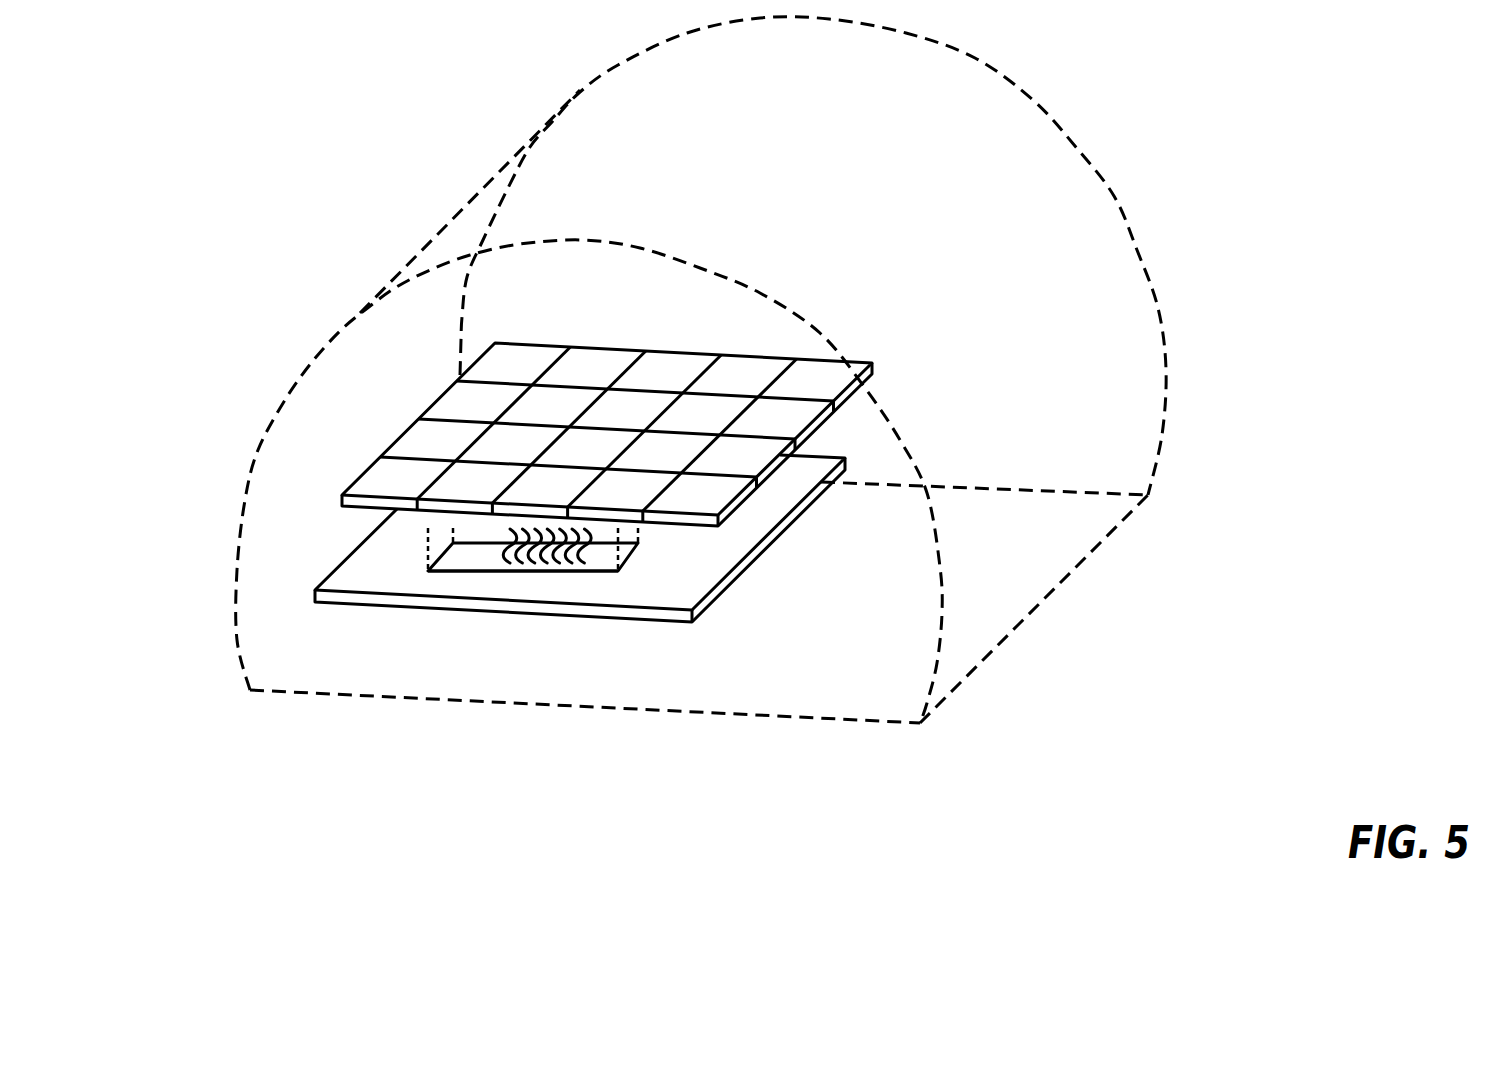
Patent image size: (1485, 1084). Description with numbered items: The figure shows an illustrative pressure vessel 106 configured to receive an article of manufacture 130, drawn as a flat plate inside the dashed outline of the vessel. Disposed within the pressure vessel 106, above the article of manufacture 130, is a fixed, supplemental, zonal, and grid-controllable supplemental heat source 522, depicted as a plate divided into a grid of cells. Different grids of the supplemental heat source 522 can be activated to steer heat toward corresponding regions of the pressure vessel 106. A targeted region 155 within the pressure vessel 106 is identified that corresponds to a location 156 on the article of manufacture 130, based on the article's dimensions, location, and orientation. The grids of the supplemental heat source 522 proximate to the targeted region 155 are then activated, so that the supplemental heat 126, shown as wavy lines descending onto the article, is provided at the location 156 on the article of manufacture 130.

The pressure vessel 106 is at (1221, 108).
The supplemental heat source 522 is at (410, 427).
The supplemental heat 126 is at (498, 535).
The article of manufacture 130 is at (698, 573).
The targeted region 155 is at (428, 544).
The location 156 is at (477, 572).